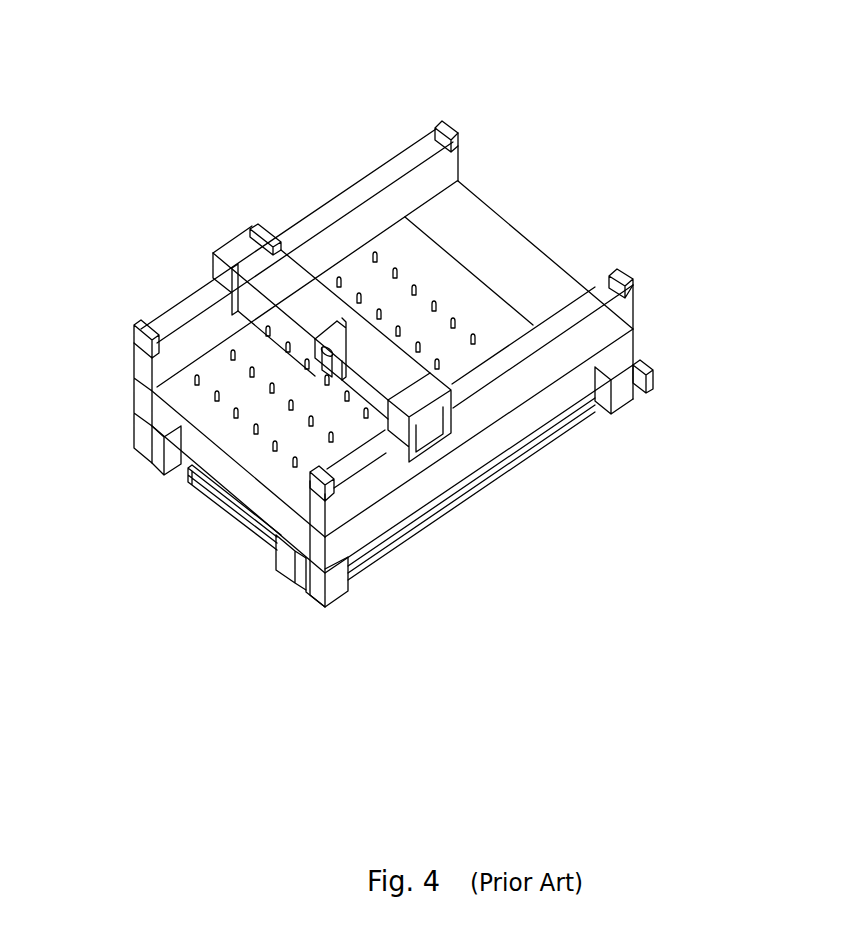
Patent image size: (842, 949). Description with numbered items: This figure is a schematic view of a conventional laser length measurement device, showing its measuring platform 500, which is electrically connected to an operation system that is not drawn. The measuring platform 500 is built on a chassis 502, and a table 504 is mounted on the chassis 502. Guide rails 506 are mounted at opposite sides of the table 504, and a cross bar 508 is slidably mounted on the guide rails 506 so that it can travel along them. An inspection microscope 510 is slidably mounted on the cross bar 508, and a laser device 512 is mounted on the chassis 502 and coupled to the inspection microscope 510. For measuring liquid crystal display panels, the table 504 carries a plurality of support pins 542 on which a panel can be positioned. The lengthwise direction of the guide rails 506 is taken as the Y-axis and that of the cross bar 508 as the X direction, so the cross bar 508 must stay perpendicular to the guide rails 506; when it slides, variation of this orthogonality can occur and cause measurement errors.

The measuring platform 500 is at (394, 42).
The chassis 502 is at (338, 583).
The table 504 is at (428, 485).
The guide rails 506 is at (505, 393).
The cross bar 508 is at (278, 278).
The inspection microscope 510 is at (318, 356).
The laser device 512 is at (650, 380).
The support pins 542 is at (277, 447).